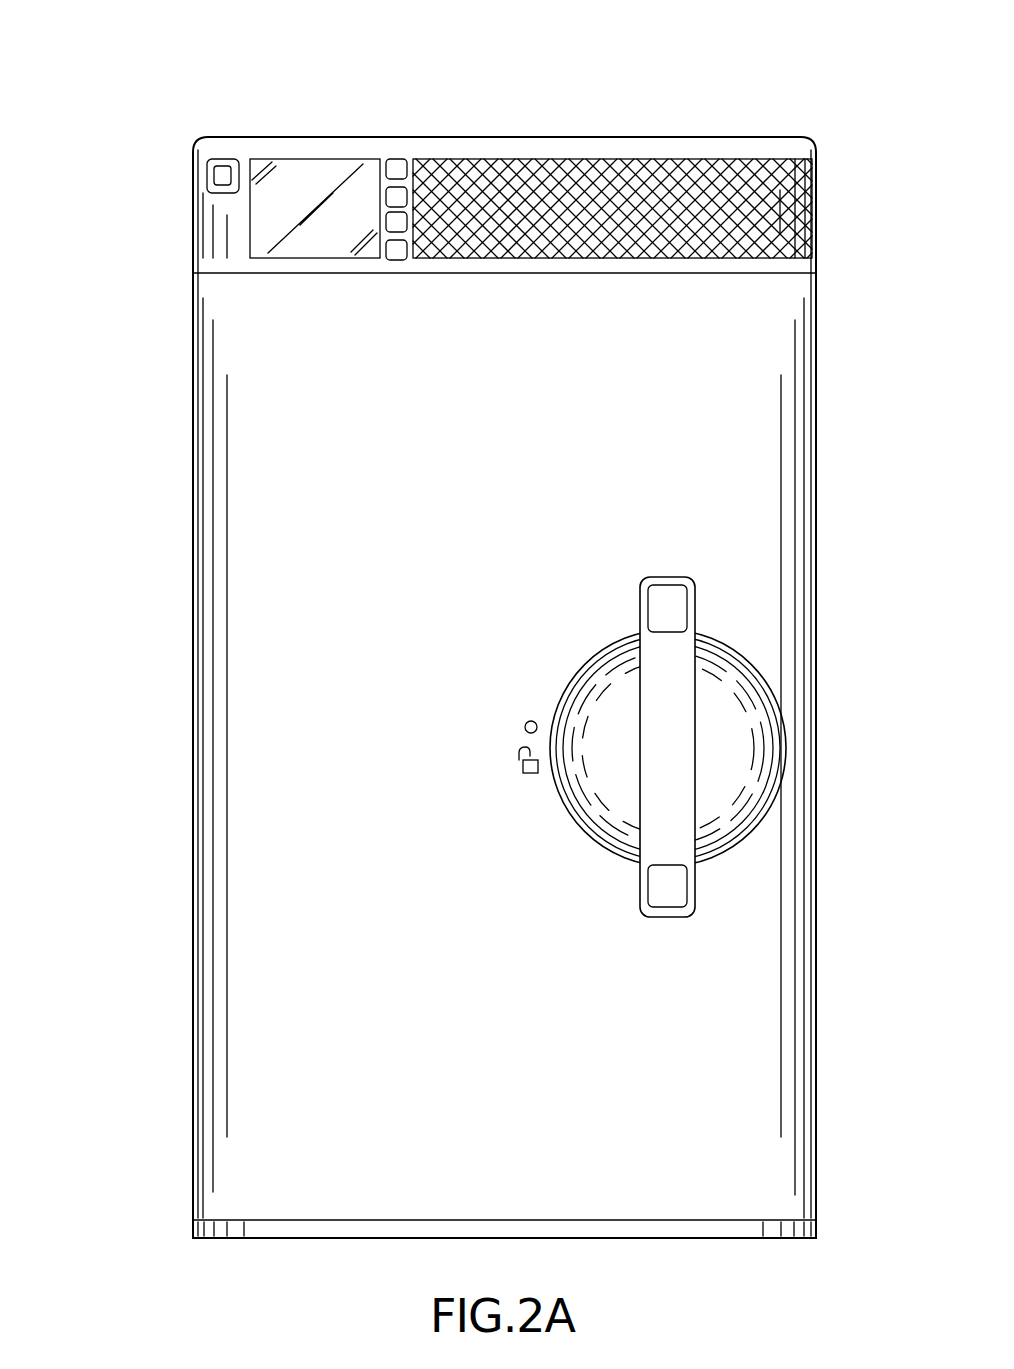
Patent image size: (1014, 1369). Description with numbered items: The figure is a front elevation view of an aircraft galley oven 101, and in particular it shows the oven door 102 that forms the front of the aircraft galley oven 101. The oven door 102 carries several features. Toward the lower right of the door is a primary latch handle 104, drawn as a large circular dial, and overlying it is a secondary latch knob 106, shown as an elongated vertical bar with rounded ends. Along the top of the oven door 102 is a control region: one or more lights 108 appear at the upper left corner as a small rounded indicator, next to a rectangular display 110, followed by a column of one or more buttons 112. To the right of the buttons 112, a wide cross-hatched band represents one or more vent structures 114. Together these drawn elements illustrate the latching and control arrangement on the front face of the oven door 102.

The aircraft galley oven 101 is at (140, 27).
The oven door 102 is at (192, 388).
The primary latch handle 104 is at (667, 705).
The secondary latch knob 106 is at (667, 607).
The lights 108 is at (222, 170).
The display 110 is at (313, 172).
The buttons 112 is at (397, 170).
The vent structures 114 is at (613, 165).